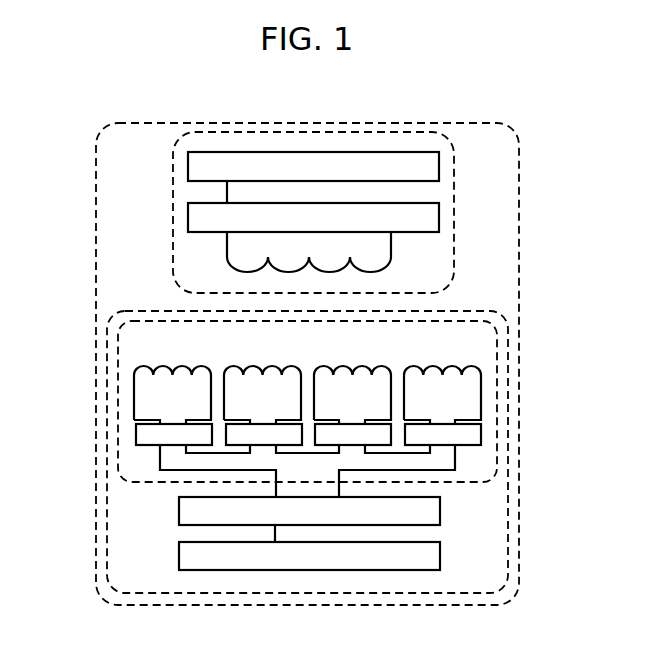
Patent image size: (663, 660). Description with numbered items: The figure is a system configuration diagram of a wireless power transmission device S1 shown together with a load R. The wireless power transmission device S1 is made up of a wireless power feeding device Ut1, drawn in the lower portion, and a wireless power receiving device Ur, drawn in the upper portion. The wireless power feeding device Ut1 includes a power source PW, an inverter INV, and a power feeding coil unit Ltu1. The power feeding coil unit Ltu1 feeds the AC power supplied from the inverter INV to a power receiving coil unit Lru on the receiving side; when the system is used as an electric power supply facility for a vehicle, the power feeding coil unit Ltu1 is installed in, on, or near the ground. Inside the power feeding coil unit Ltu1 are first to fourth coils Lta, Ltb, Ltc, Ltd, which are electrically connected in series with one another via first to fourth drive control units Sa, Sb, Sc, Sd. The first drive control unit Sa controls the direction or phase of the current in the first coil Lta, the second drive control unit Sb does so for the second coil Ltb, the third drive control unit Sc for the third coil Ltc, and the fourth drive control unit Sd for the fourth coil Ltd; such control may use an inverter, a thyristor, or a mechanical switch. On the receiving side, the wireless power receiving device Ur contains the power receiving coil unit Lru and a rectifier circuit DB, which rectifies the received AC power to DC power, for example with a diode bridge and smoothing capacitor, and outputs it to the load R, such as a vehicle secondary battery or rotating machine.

The wireless power transmission device S1 is at (510, 126).
The wireless power receiving device Ur is at (454, 188).
The load R is at (188, 163).
The rectifier circuit DB is at (188, 210).
The power receiving coil unit Lru is at (391, 262).
The wireless power feeding device Ut1 is at (508, 537).
The power feeding coil unit Ltu1 is at (497, 408).
The first coil Lta is at (252, 366).
The second coil Ltb is at (360, 367).
The third coil Ltc is at (140, 366).
The fourth coil Ltd is at (478, 368).
The first drive control unit Sa is at (234, 439).
The second drive control unit Sb is at (378, 439).
The third drive control unit Sc is at (140, 432).
The fourth drive control unit Sd is at (468, 434).
The inverter INV is at (179, 507).
The power source PW is at (179, 552).